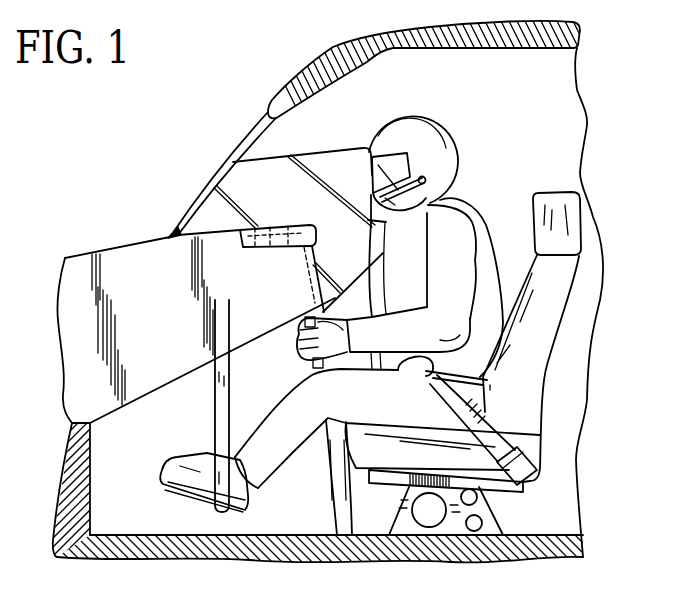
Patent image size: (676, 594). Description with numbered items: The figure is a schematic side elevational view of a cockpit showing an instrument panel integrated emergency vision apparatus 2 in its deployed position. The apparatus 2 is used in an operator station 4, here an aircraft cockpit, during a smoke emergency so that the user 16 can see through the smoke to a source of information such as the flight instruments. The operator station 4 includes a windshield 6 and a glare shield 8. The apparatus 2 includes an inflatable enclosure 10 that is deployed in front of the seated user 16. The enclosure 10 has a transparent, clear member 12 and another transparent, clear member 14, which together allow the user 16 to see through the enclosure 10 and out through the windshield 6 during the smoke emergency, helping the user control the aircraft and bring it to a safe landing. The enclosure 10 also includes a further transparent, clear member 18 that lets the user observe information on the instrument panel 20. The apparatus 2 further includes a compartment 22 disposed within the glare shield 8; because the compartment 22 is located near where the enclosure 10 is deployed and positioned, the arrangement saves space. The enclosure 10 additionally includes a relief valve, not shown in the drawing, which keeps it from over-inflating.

The instrument panel integrated emergency vision apparatus 2 is at (359, 128).
The operator station 4 is at (535, 94).
The windshield 6 is at (233, 156).
The glare shield 8 is at (181, 233).
The inflatable enclosure 10 is at (268, 153).
The transparent, clear member 12 is at (208, 178).
The transparent, clear member 14 is at (370, 173).
The user 16 is at (481, 212).
The transparent, clear member 18 is at (305, 263).
The instrument panel 20 is at (302, 292).
The compartment 22 is at (238, 243).